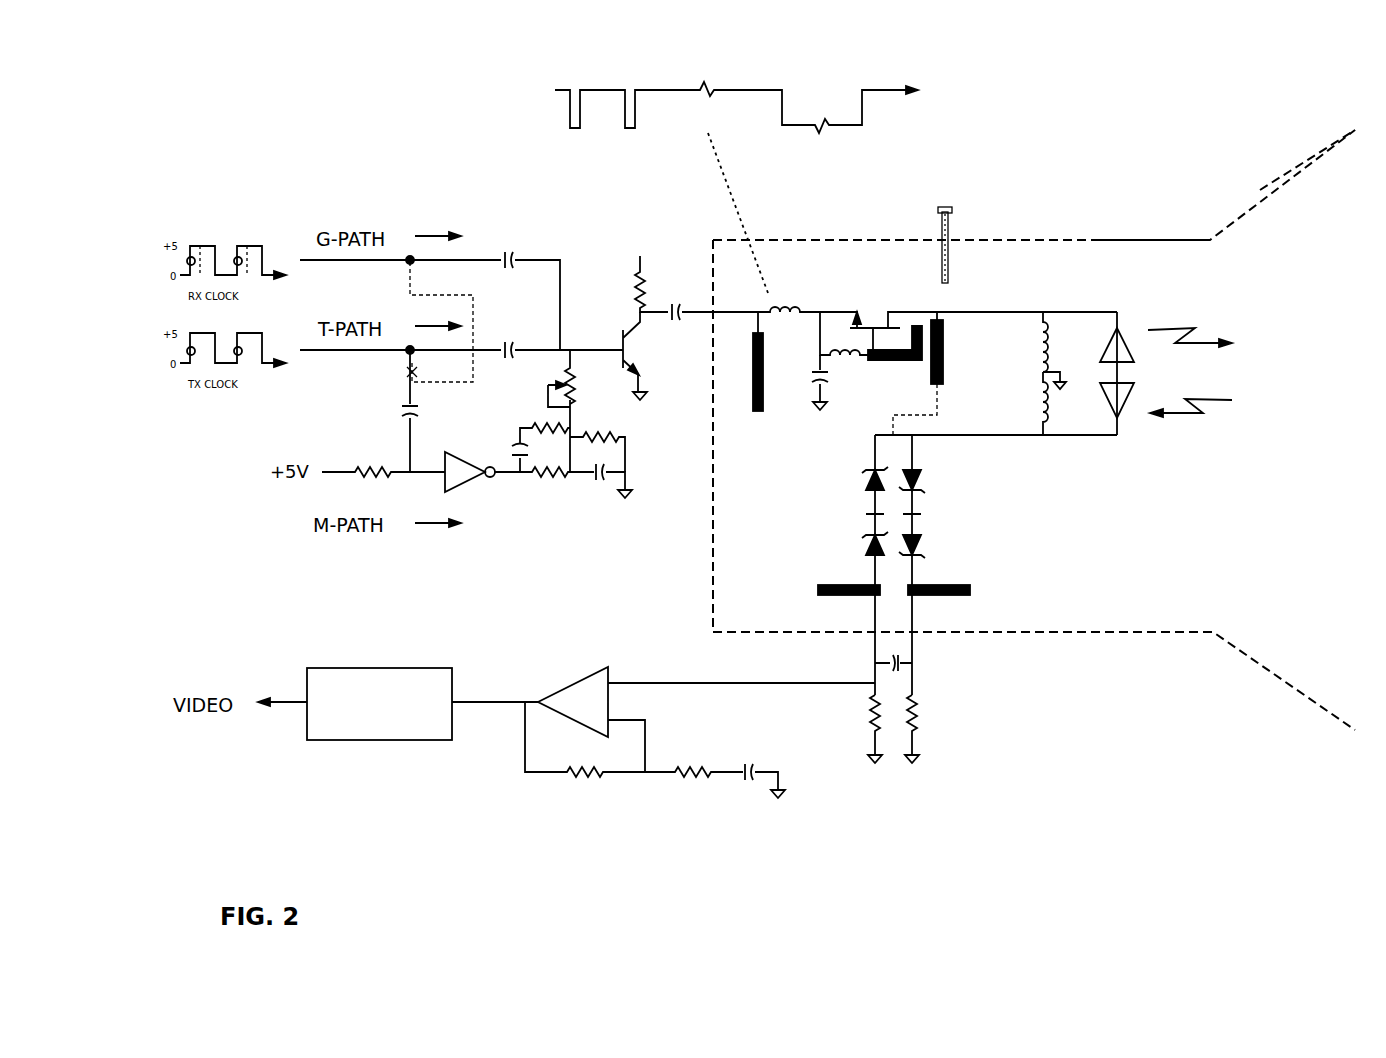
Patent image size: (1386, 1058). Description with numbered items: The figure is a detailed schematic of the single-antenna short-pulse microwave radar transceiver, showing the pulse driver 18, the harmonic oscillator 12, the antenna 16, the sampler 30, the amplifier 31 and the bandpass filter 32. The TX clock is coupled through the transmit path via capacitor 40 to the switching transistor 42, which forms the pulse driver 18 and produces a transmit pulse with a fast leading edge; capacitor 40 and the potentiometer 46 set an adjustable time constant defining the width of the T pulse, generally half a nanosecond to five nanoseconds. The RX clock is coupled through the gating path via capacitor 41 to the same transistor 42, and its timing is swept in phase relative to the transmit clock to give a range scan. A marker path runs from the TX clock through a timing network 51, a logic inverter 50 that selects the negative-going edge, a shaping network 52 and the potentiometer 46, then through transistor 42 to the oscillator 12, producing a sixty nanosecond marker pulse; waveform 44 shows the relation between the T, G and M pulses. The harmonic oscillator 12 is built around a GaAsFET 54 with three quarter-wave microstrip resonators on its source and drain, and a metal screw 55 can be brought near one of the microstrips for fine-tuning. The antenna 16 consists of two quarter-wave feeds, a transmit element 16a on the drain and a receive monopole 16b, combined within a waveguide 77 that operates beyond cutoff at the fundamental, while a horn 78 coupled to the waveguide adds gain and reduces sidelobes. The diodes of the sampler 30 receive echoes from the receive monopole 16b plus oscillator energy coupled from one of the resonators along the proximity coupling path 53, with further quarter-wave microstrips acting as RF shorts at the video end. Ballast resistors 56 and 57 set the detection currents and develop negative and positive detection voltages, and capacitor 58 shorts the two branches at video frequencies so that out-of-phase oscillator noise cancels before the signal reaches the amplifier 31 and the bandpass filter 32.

The harmonic oscillator 12 is at (862, 264).
The antenna 16 is at (1226, 372).
The antenna element 16a is at (1133, 330).
The receive monopole 16b is at (1135, 405).
The pulse driver 18 is at (586, 248).
The sampler 30 is at (995, 506).
The amplifier 31 is at (650, 810).
The bandpass filter 32 is at (380, 740).
The capacitor 40 is at (505, 340).
The capacitor 41 is at (505, 250).
The switching transistor 42 is at (644, 347).
The waveform 44 is at (532, 107).
The potentiometer 46 is at (576, 382).
The logic inverter 50 is at (472, 485).
The timing network 51 is at (376, 440).
The shaping network 52 is at (571, 494).
The proximity coupling path 53 is at (938, 408).
The GaAsFET 54 is at (874, 320).
The metal screw 55 is at (950, 256).
The ballast resistor 56 is at (868, 710).
The ballast resistor 57 is at (920, 710).
The capacitor 58 is at (898, 655).
The waveguide 77 is at (1105, 236).
The horn 78 is at (1275, 186).